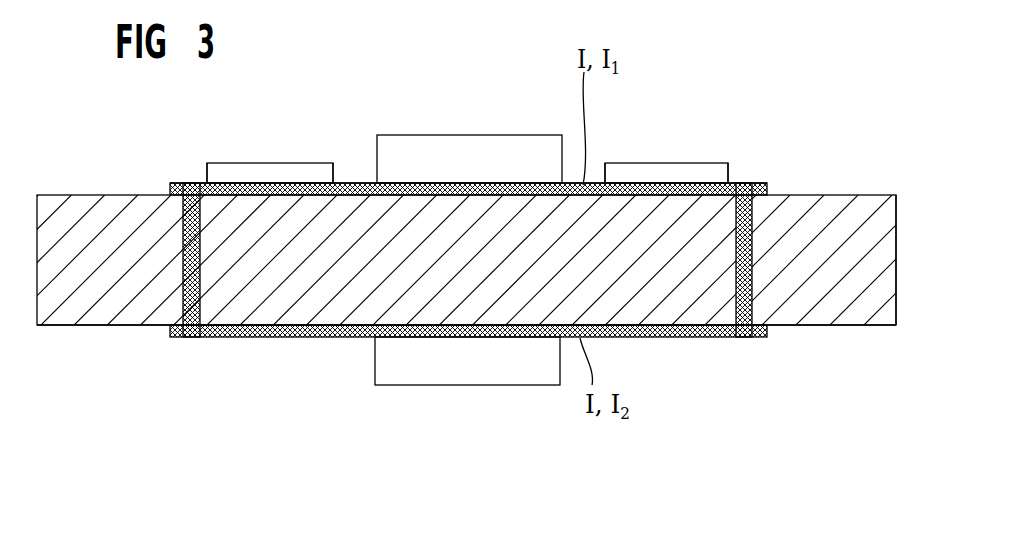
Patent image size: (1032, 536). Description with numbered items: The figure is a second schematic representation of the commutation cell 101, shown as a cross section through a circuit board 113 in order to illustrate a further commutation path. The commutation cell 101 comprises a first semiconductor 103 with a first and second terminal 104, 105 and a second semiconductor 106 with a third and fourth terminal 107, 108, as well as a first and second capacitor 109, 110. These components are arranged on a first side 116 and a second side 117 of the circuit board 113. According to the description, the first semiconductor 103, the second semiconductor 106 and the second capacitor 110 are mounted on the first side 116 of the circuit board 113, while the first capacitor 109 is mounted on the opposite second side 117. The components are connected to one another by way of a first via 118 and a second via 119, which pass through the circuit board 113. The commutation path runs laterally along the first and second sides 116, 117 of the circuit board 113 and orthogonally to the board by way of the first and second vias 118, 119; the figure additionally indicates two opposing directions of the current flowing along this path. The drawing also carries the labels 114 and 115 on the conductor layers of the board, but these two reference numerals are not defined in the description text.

The commutation cell 101 is at (425, 80).
The first semiconductor 103 is at (270, 163).
The first terminal 104 is at (205, 183).
The second terminal 105 is at (337, 183).
The second semiconductor 106 is at (668, 163).
The third terminal 107 is at (738, 183).
The fourth terminal 108 is at (605, 163).
The first capacitor 109 is at (465, 386).
The second capacitor 110 is at (466, 135).
The circuit board 113 is at (833, 195).
The top conductive layer 114 is at (178, 183).
The top conductive layer edge 115 is at (566, 185).
The first side 116 is at (876, 195).
The second side 117 is at (872, 326).
The first via 118 is at (185, 272).
The second via 119 is at (752, 272).